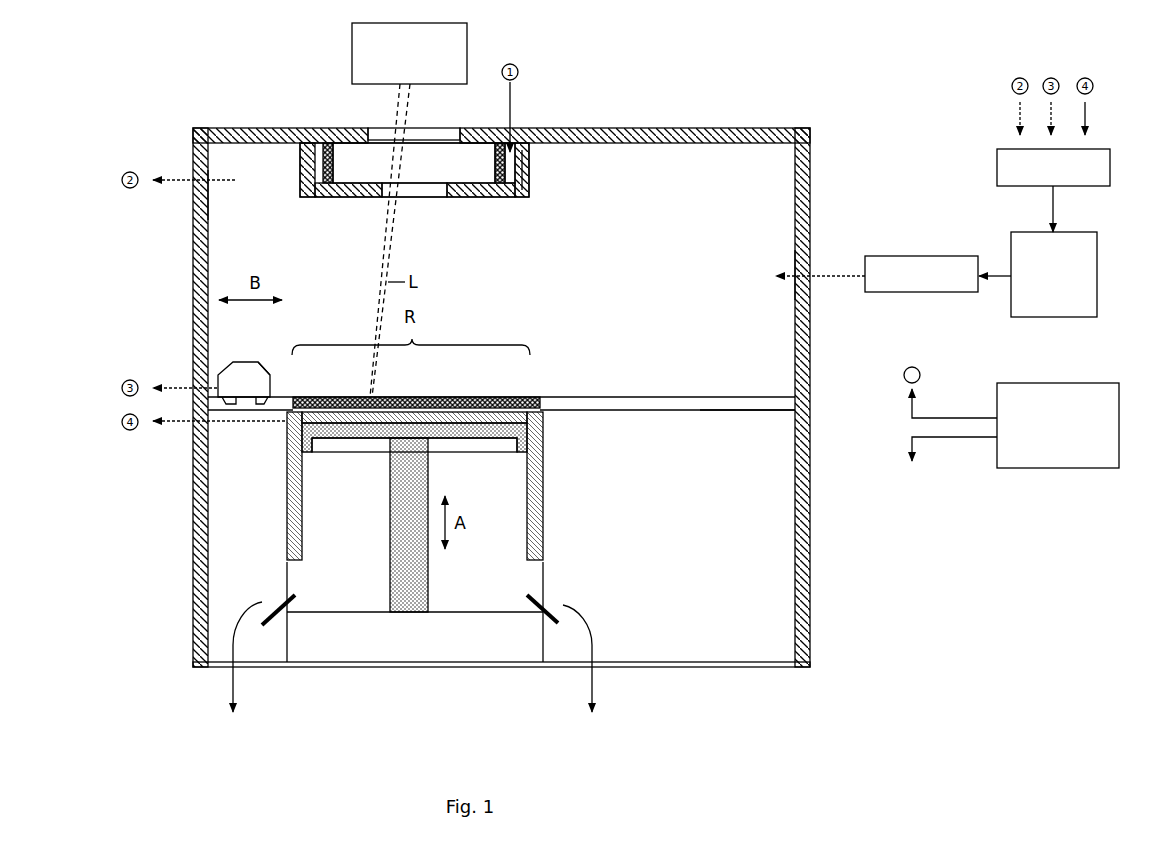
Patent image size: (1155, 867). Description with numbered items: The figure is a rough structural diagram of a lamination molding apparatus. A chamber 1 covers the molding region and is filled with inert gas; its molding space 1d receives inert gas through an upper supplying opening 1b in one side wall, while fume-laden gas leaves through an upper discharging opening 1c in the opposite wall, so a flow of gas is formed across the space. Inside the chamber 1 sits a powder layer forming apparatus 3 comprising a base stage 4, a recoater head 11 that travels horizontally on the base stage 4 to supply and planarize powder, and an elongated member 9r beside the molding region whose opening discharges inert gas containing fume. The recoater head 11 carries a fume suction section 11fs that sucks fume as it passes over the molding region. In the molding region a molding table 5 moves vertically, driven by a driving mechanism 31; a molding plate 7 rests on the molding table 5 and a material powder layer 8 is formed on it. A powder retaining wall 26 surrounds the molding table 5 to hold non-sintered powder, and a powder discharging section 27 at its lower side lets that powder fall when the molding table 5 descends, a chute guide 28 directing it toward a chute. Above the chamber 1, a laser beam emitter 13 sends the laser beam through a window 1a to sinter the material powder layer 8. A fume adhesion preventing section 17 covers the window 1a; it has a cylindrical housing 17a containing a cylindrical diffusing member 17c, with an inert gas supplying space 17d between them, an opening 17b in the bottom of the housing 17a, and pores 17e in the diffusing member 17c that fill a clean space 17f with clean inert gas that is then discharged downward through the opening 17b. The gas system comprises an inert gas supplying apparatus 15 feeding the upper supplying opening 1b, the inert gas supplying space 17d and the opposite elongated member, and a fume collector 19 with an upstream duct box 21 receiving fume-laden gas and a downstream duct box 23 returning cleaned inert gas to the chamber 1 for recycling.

The chamber 1 is at (232, 128).
The window 1a is at (380, 127).
The upper supplying opening 1b is at (790, 285).
The upper discharging opening 1c is at (216, 194).
The molding space 1d is at (551, 304).
The powder layer forming apparatus 3 is at (577, 379).
The base stage 4 is at (733, 411).
The molding table 5 is at (520, 430).
The molding plate 7 is at (453, 420).
The material powder layer 8 is at (518, 415).
The elongated member 9r is at (462, 397).
The recoater head 11 is at (240, 362).
The fume suction section 11fs is at (270, 374).
The laser beam emitter 13 is at (409, 53).
The inert gas supplying apparatus 15 is at (992, 443).
The fume adhesion preventing section 17 is at (459, 183).
The housing 17a is at (530, 163).
The opening 17b is at (428, 204).
The diffusing member 17c is at (493, 163).
The inert gas supplying space 17d is at (512, 198).
The pores 17e is at (490, 155).
The clean space 17f is at (353, 172).
The fume collector 19 is at (1054, 274).
The duct box 21 is at (1053, 167).
The duct box 23 is at (893, 274).
The powder retaining wall 26 is at (290, 525).
The powder discharging section 27 is at (288, 580).
The chute guide 28 is at (268, 625).
The driving mechanism 31 is at (428, 588).